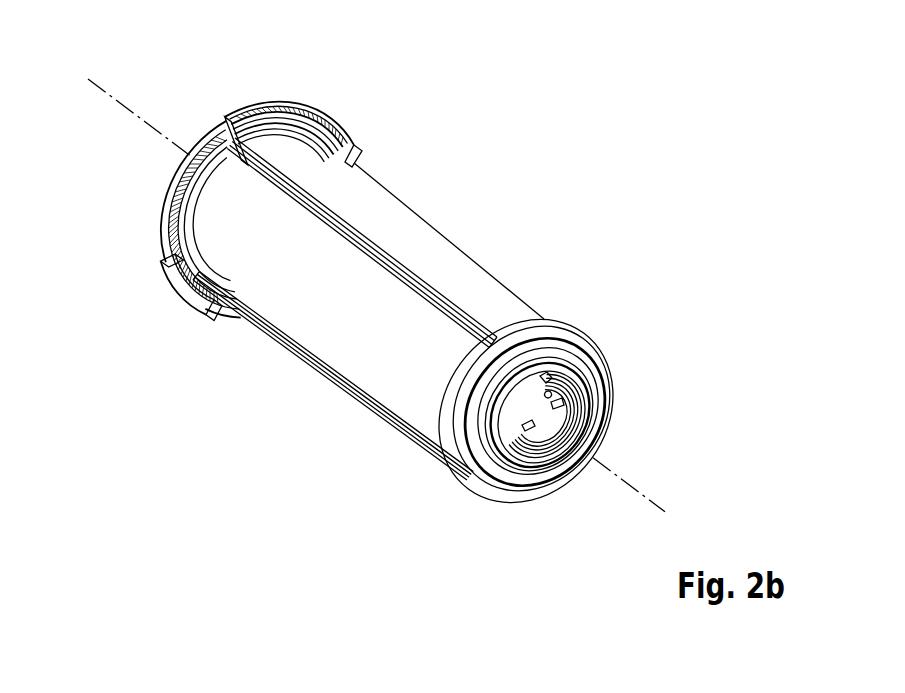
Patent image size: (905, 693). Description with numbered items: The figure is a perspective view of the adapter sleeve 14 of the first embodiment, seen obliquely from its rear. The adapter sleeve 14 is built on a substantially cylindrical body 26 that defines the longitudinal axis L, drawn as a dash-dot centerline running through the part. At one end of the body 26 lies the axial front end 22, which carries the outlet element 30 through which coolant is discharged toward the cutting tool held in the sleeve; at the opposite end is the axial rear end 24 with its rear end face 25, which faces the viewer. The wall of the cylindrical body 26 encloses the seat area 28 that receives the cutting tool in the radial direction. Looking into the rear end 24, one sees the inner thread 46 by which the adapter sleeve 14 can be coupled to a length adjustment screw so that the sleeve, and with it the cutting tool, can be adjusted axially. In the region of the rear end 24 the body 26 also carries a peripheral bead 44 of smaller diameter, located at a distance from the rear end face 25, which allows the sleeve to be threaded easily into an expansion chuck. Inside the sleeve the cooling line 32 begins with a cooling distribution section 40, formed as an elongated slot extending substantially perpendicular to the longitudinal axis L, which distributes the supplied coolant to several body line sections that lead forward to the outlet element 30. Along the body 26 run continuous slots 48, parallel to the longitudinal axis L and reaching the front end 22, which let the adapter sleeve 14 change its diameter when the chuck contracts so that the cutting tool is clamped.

The longitudinal axis L is at (103, 86).
The adapter sleeve 14 is at (368, 273).
The axial front end 22 is at (303, 66).
The axial rear end 24 is at (537, 396).
The rear end face 25 is at (507, 505).
The cylindrical body 26 is at (395, 203).
The seat area 28 is at (510, 426).
The outlet element 30 is at (250, 115).
The cooling line 32 is at (540, 388).
The cooling distribution section 40 is at (575, 416).
The bead 44 is at (586, 339).
The inner thread 46 is at (566, 455).
The continuous slots 48 is at (410, 265).